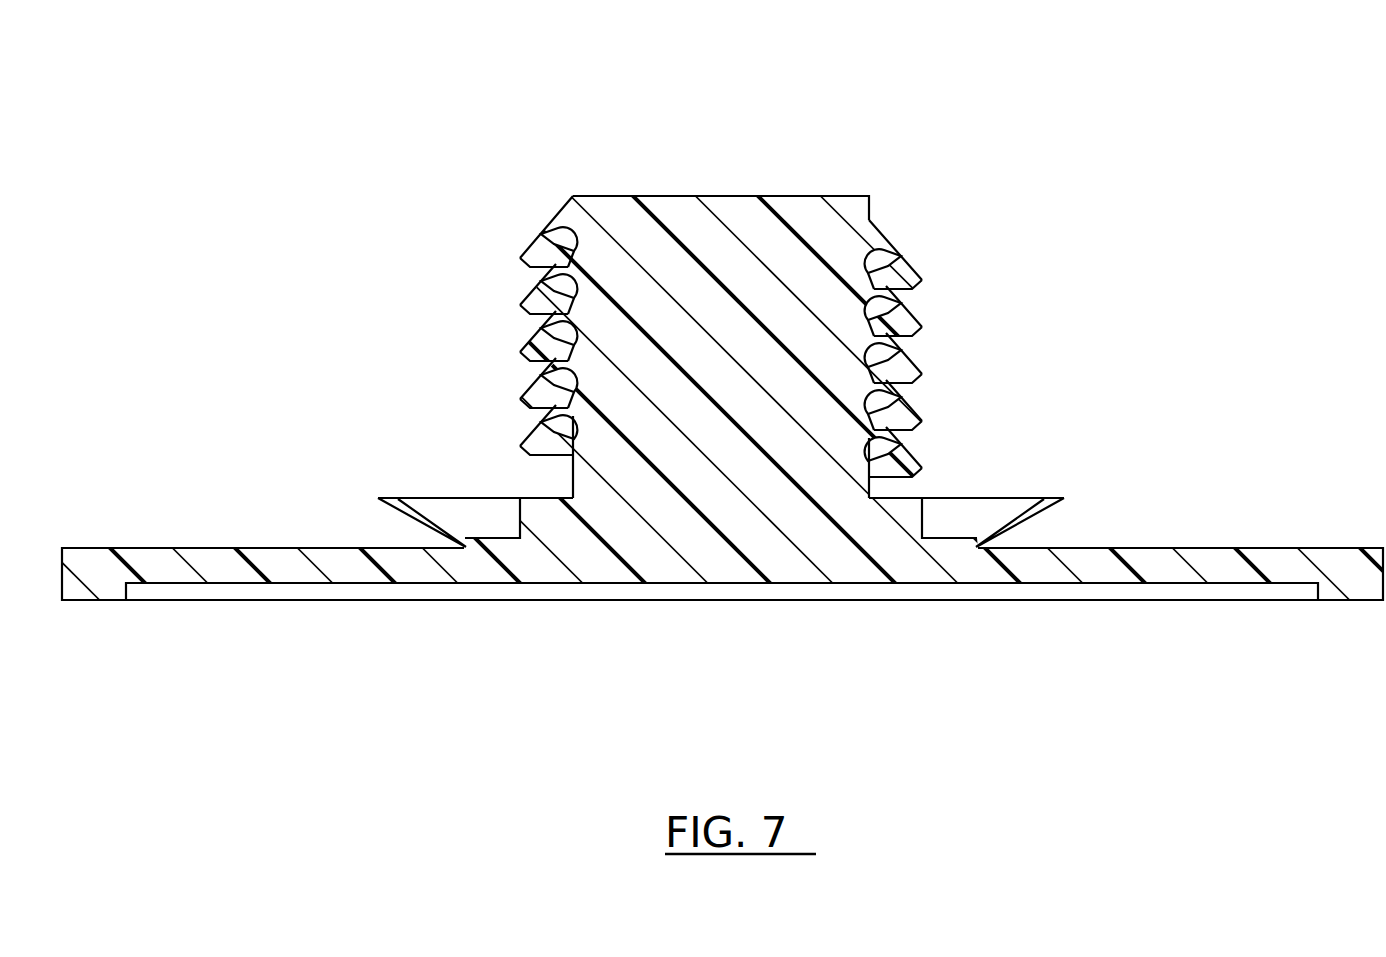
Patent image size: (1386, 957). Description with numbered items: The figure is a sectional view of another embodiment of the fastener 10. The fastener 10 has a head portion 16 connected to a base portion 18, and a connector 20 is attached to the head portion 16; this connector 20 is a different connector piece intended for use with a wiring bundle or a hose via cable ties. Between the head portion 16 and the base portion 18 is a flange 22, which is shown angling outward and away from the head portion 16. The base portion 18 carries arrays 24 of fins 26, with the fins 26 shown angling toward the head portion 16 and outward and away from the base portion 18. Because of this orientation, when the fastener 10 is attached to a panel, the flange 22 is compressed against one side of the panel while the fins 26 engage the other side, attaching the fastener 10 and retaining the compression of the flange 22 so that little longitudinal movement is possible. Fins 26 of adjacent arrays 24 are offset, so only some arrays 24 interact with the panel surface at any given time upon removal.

The fastener 10 is at (1084, 141).
The head portion 16 is at (461, 635).
The base portion 18 is at (669, 196).
The connector 20 is at (1168, 570).
The flange 22 is at (988, 508).
The array of fins 24 is at (950, 255).
The fin 26 is at (903, 288).